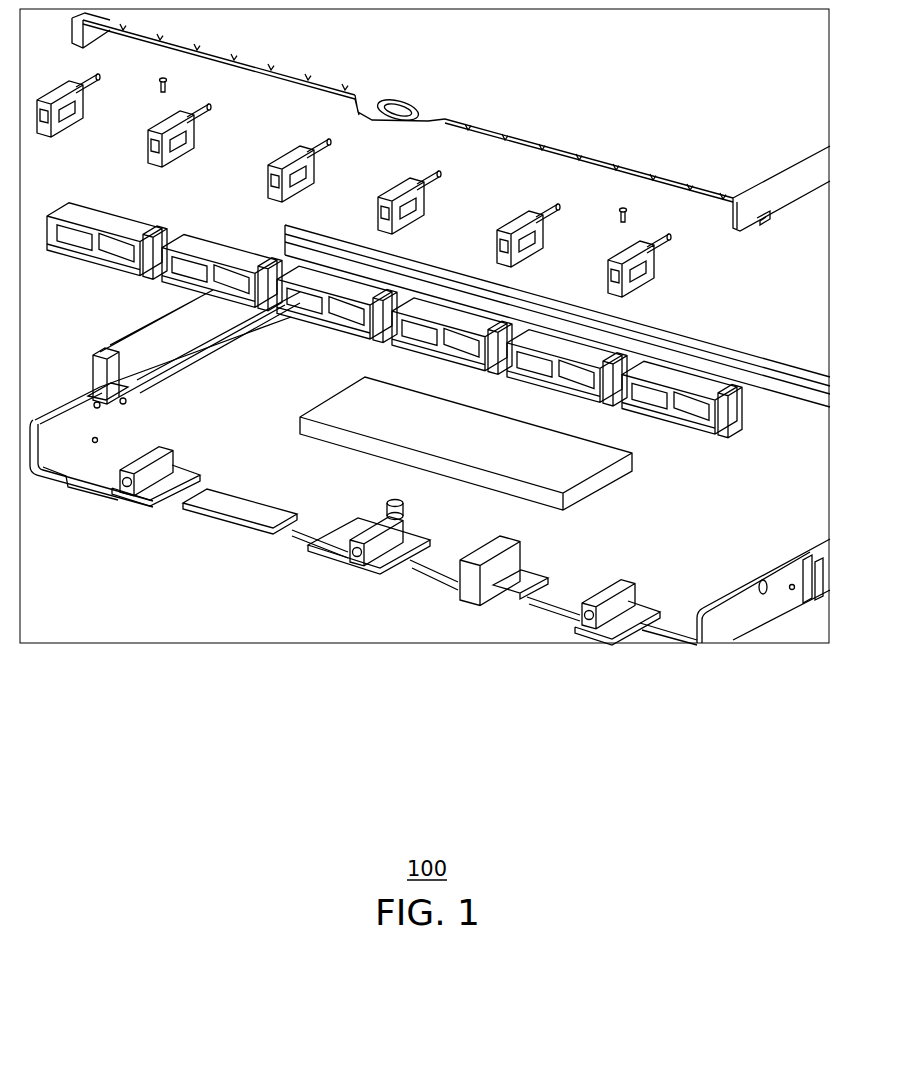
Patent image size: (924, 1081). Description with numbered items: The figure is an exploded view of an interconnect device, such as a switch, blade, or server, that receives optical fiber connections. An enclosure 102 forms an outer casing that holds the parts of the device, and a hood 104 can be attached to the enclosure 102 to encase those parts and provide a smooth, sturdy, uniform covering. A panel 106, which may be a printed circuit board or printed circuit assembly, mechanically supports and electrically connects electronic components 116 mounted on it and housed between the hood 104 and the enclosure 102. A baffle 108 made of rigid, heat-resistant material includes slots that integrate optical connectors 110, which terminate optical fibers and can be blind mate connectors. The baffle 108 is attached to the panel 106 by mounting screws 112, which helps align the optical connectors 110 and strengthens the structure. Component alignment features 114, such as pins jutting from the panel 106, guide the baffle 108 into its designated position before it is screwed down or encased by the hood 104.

The enclosure 102 is at (757, 352).
The hood 104 is at (798, 201).
The panel 106 is at (273, 527).
The baffle 108 is at (723, 418).
The optical connector 110 is at (62, 132).
The mounting screw 112 is at (168, 83).
The component alignment feature 114 is at (200, 494).
The electronic components 116 is at (603, 487).